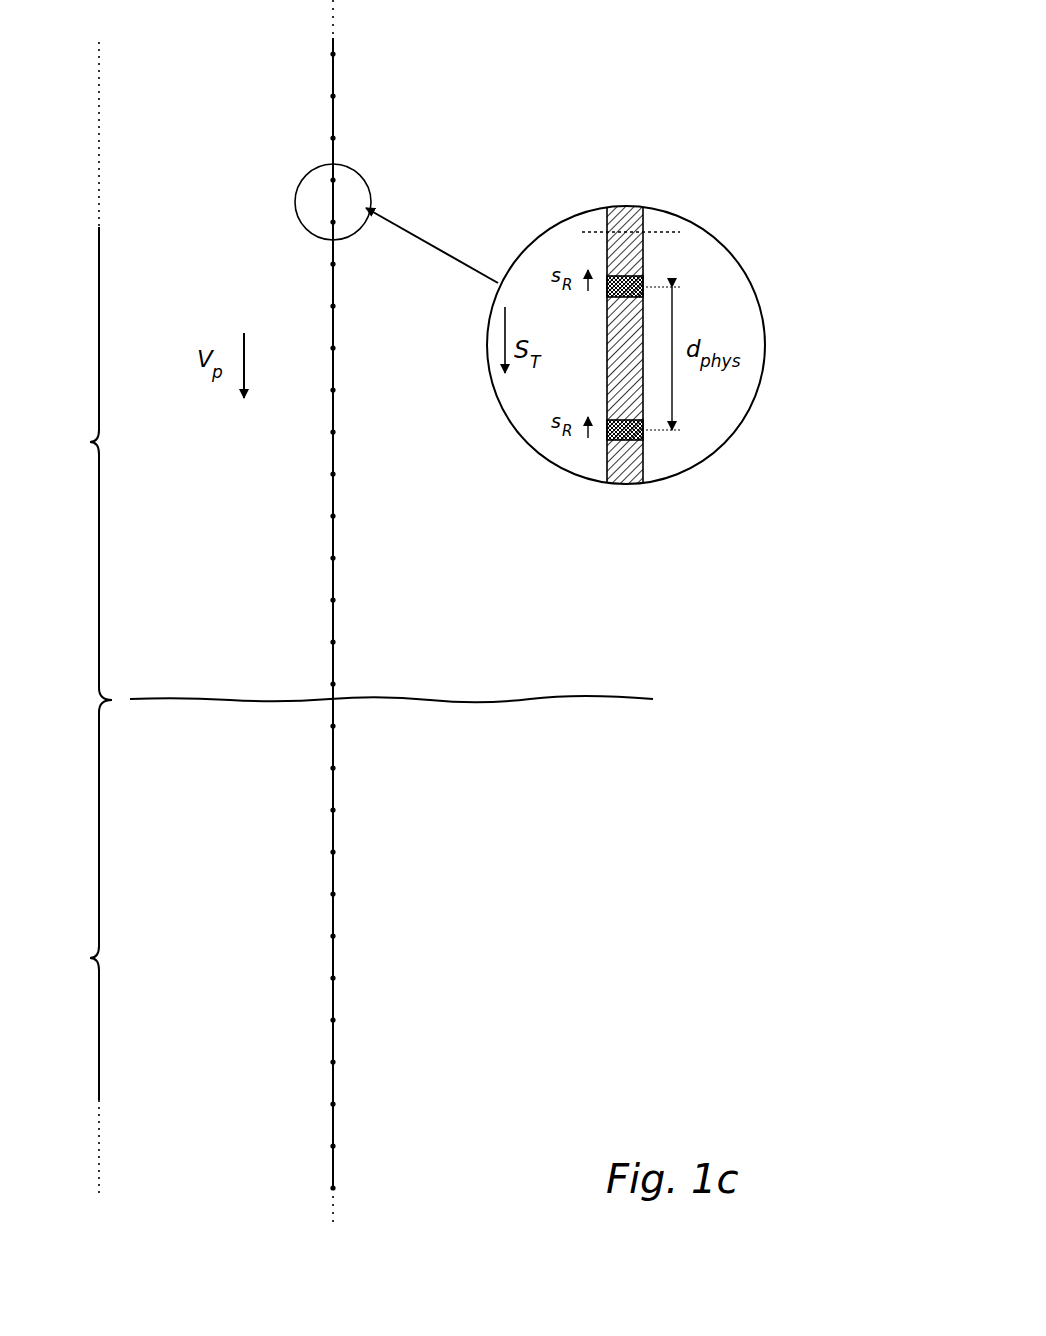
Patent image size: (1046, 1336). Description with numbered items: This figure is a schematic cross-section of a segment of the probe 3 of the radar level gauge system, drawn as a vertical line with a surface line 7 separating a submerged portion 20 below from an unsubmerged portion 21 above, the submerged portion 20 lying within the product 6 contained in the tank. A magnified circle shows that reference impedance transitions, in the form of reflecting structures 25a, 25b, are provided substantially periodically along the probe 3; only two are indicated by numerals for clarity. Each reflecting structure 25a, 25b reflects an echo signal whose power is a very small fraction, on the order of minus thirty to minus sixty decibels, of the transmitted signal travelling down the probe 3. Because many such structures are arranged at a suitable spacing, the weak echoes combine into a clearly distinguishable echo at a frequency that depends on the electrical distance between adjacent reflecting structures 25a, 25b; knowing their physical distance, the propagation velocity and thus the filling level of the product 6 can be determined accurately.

The unsubmerged portion 21 is at (83, 371).
The submerged portion 20 is at (83, 946).
The interface line 7 is at (541, 697).
The probe 3 is at (334, 787).
The product 6 is at (223, 927).
The reflecting structure 25a is at (643, 280).
The reflecting structure 25b is at (643, 437).